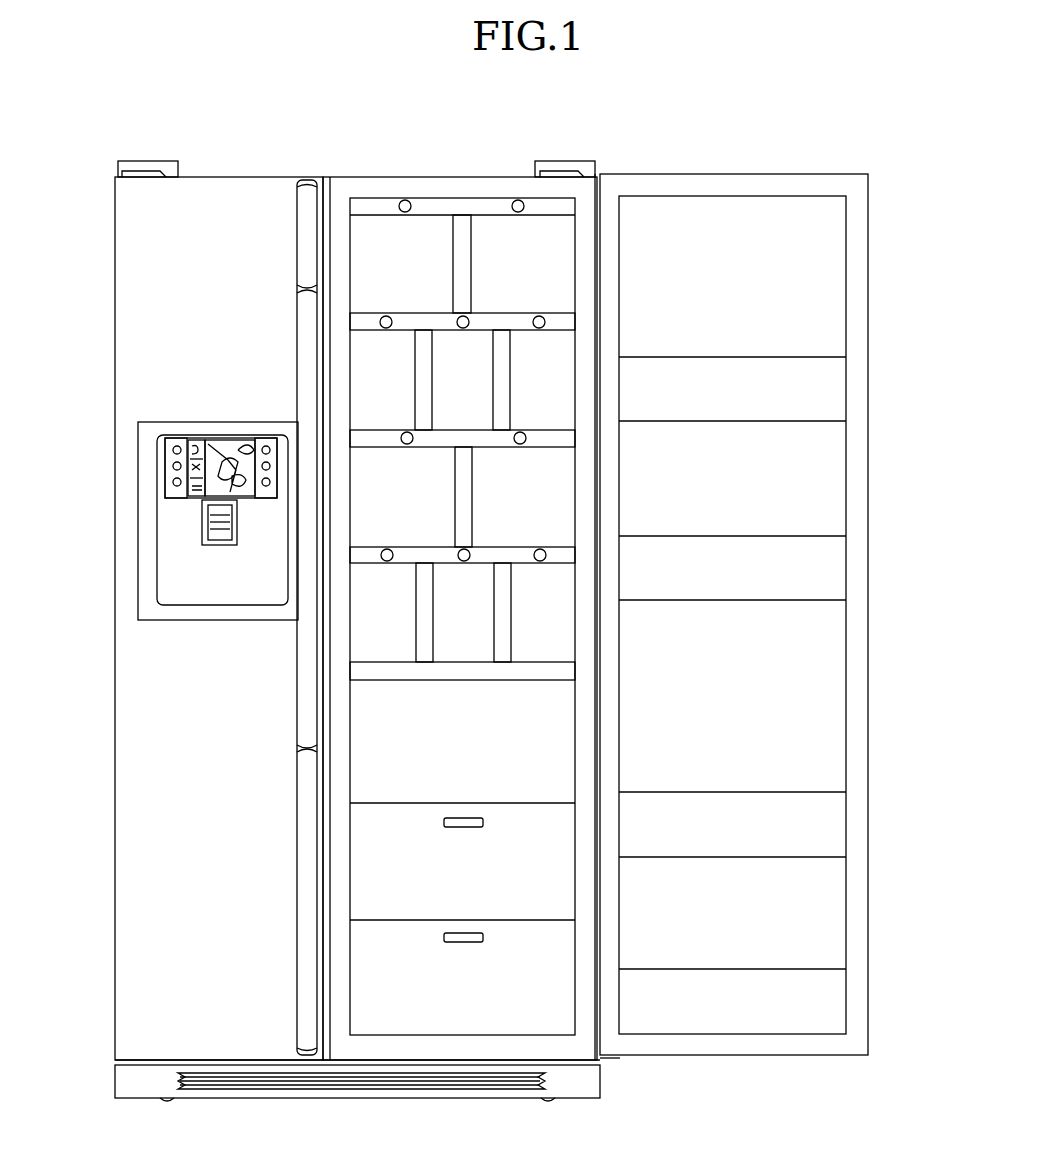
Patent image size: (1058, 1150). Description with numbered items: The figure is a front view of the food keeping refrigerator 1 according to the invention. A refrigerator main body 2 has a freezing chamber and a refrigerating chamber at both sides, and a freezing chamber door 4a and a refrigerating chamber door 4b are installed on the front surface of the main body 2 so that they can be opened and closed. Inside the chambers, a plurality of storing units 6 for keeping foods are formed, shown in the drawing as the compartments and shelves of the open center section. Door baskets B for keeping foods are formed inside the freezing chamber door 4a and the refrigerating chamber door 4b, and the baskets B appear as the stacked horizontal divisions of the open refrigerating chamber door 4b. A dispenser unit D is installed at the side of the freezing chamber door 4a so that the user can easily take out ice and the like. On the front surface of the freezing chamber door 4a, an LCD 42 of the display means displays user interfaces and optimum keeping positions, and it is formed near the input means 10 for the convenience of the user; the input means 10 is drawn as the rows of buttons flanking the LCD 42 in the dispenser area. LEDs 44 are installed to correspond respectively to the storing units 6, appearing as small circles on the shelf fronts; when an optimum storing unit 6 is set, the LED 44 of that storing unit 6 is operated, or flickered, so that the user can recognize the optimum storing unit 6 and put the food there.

The food keeping refrigerator 1 is at (825, 162).
The refrigerator main body 2 is at (360, 176).
The freezing chamber door 4a is at (145, 264).
The refrigerating chamber door 4b is at (857, 266).
The storing unit 6 is at (421, 238).
The LED 44 is at (517, 199).
The LCD 42 is at (215, 440).
The input means 10 is at (170, 450).
The dispenser unit D is at (150, 555).
The door basket B is at (790, 388).